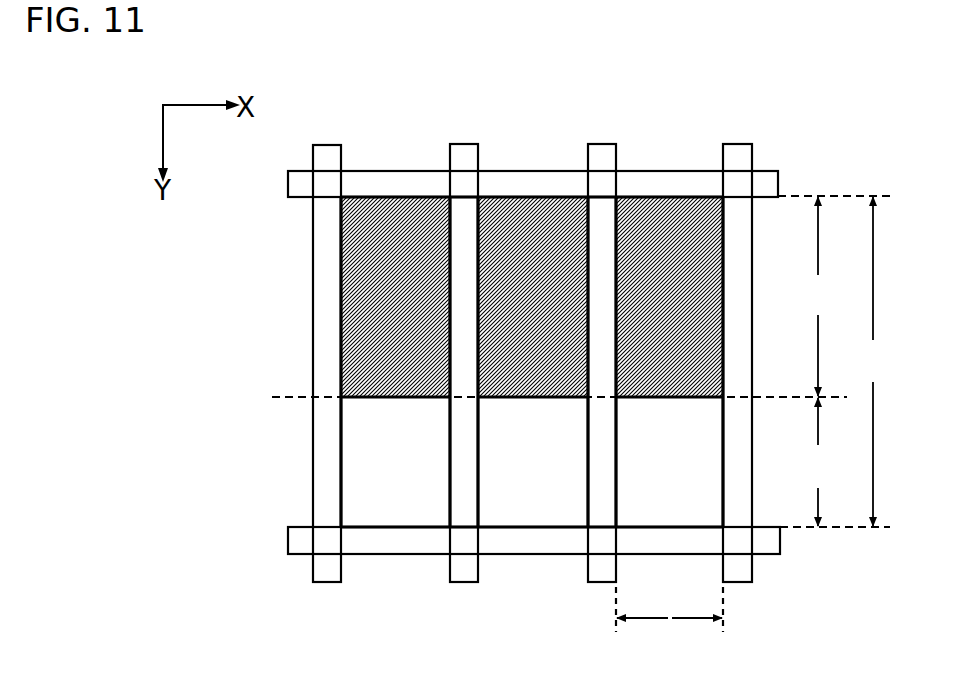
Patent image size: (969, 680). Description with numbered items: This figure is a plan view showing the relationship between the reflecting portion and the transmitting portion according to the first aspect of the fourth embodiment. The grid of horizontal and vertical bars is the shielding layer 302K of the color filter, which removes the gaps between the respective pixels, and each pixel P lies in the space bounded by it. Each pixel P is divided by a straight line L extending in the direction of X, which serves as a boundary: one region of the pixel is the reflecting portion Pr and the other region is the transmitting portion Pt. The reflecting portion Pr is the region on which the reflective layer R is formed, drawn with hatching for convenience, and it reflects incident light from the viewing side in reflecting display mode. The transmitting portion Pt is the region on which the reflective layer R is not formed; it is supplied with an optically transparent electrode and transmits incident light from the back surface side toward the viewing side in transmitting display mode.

The reflective layer R is at (412, 202).
The shielding layer 302K is at (700, 178).
The boundary line L is at (545, 400).
The pixel P is at (748, 414).
The reflecting portion Pr is at (816, 296).
The transmitting portion Pt is at (818, 462).